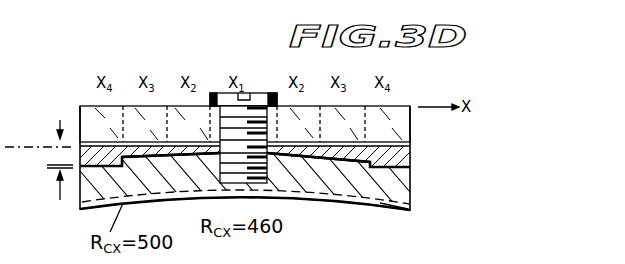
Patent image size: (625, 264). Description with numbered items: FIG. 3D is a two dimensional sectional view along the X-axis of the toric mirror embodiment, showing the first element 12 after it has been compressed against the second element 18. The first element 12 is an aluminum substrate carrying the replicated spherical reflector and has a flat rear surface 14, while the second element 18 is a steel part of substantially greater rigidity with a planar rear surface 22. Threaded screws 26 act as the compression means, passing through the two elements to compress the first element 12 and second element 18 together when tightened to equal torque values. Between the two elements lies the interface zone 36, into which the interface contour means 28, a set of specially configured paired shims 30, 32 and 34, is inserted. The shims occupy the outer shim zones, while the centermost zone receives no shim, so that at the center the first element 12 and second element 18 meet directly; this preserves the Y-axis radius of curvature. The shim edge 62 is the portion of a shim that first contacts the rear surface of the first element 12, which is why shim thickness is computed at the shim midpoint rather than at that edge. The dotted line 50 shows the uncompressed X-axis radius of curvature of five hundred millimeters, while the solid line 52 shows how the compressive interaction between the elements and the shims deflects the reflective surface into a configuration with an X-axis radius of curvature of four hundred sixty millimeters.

The first element 12 is at (80, 191).
The rear surface 14 is at (149, 164).
The second element 18 is at (80, 120).
The planar rear surface 22 is at (80, 106).
The threaded screws 26 is at (250, 93).
The interface contour means 28 is at (58, 161).
The shim 30 is at (243, 124).
The shim 32 is at (242, 124).
The shim 34 is at (243, 124).
The interface zone 36 is at (60, 188).
The dotted line 50 is at (328, 182).
The solid line 52 is at (375, 208).
The shim edge 62 is at (172, 162).